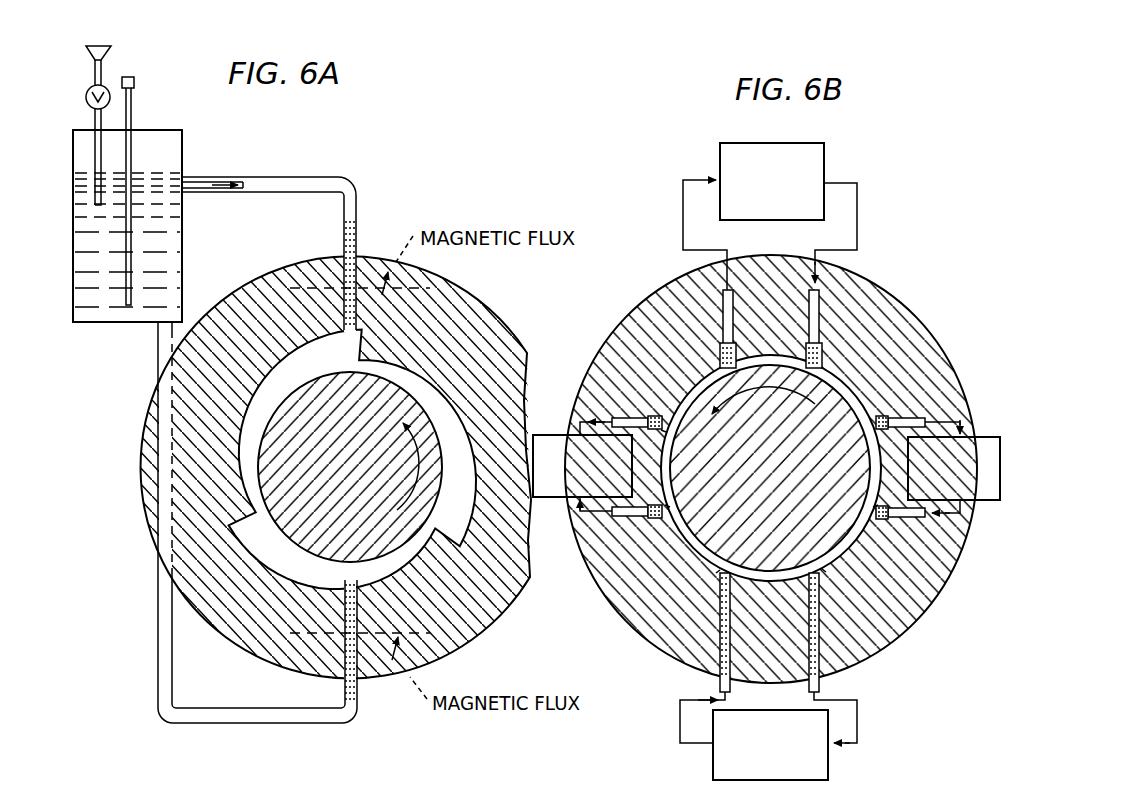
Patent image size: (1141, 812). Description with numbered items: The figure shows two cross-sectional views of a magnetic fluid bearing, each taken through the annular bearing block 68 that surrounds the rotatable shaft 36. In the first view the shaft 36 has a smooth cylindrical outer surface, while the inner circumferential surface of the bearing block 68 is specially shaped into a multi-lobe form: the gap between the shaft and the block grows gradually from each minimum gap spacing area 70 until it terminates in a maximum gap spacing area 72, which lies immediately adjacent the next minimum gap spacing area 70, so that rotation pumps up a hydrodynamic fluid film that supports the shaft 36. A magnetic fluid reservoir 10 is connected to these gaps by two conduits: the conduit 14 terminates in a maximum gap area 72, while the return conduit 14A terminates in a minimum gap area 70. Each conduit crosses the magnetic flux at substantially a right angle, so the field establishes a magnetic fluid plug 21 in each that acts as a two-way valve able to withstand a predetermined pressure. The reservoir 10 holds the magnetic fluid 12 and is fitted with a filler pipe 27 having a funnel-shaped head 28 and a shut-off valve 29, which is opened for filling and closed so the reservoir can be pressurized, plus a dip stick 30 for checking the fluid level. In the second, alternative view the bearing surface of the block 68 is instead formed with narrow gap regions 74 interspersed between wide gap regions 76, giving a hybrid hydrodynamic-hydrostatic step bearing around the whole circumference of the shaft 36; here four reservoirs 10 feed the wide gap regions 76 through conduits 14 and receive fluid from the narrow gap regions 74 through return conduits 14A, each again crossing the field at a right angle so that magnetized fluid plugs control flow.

In FIG. 6A, the magnetic fluid reservoir 10 is at (170, 130).
In FIG. 6B, the magnetic fluid reservoir 10 is at (827, 155).
In FIG. 6A, the magnetic fluid 12 is at (170, 253).
In FIG. 6A, the conduit 14 is at (320, 177).
In FIG. 6B, the conduit 14 is at (835, 292).
In FIG. 6A, the return conduit 14A is at (158, 600).
In FIG. 6B, the return conduit 14A is at (720, 303).
In FIG. 6A, the magnetic fluid plug 21 is at (347, 657).
In FIG. 6A, the filler pipe 27 is at (90, 118).
In FIG. 6A, the funnel-shaped head 28 is at (104, 46).
In FIG. 6A, the shut-off valve 29 is at (88, 89).
In FIG. 6A, the dip stick 30 is at (135, 100).
In FIG. 6A, the rotatable shaft 36 is at (446, 471).
In FIG. 6B, the rotatable shaft 36 is at (784, 453).
In FIG. 6A, the annular bearing block 68 is at (470, 292).
In FIG. 6B, the annular bearing block 68 is at (888, 292).
In FIG. 6A, the minimum gap spacing area 70 is at (358, 366).
In FIG. 6A, the maximum gap spacing area 72 is at (337, 363).
In FIG. 6B, the narrow gap region 74 is at (760, 357).
In FIG. 6B, the wide gap region 76 is at (688, 383).